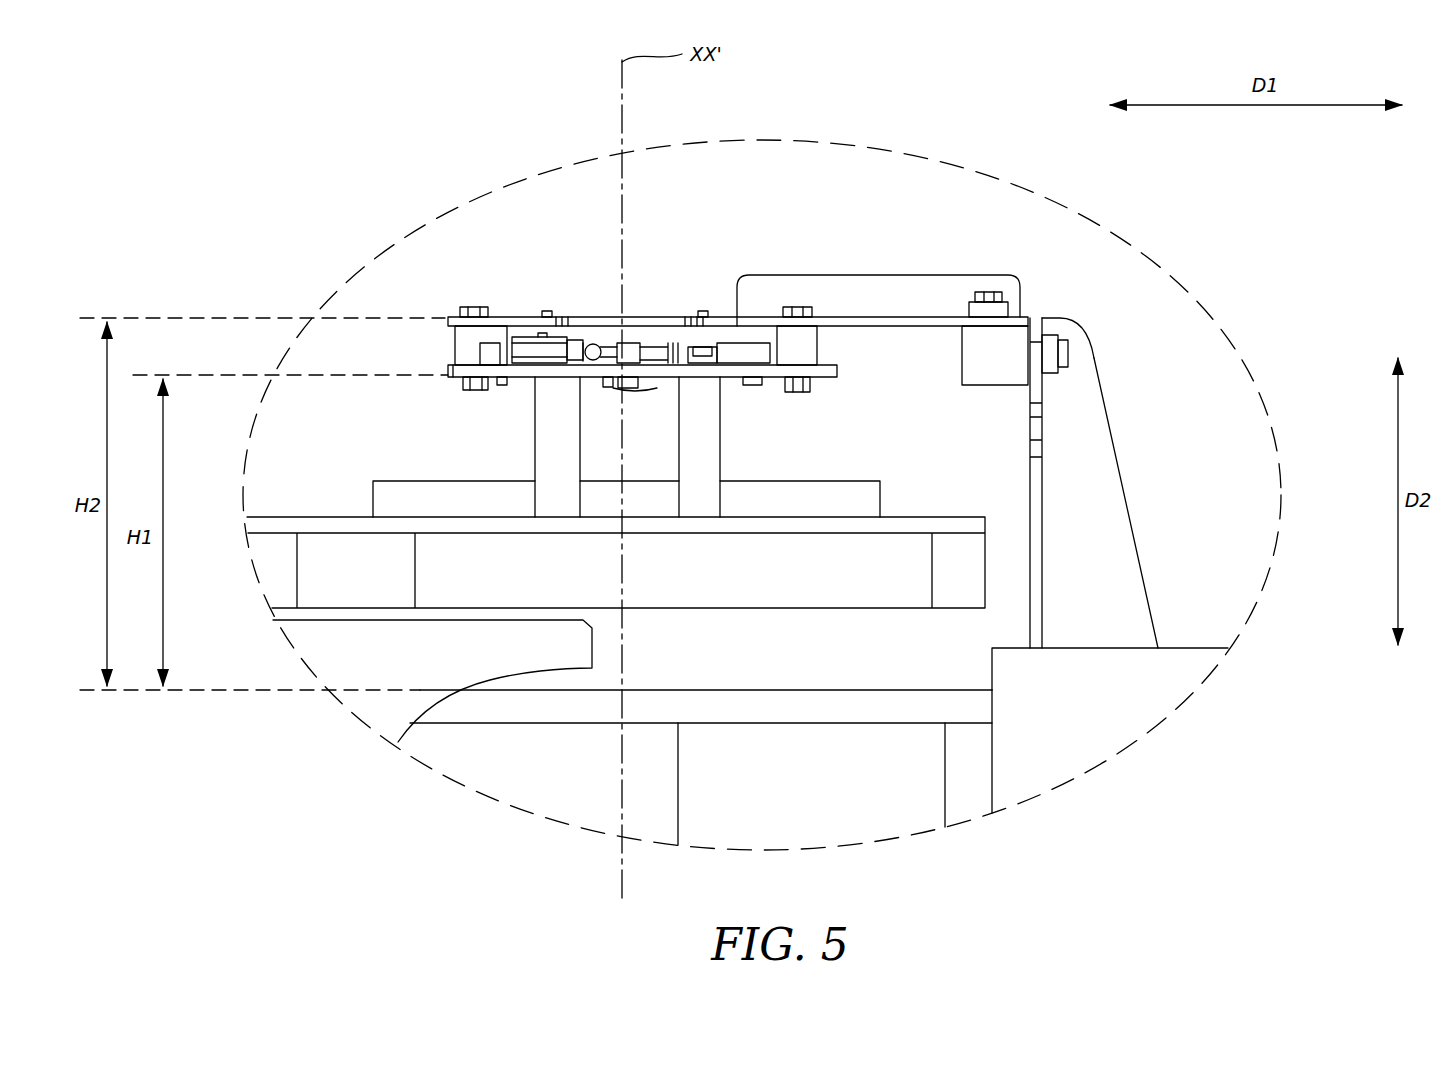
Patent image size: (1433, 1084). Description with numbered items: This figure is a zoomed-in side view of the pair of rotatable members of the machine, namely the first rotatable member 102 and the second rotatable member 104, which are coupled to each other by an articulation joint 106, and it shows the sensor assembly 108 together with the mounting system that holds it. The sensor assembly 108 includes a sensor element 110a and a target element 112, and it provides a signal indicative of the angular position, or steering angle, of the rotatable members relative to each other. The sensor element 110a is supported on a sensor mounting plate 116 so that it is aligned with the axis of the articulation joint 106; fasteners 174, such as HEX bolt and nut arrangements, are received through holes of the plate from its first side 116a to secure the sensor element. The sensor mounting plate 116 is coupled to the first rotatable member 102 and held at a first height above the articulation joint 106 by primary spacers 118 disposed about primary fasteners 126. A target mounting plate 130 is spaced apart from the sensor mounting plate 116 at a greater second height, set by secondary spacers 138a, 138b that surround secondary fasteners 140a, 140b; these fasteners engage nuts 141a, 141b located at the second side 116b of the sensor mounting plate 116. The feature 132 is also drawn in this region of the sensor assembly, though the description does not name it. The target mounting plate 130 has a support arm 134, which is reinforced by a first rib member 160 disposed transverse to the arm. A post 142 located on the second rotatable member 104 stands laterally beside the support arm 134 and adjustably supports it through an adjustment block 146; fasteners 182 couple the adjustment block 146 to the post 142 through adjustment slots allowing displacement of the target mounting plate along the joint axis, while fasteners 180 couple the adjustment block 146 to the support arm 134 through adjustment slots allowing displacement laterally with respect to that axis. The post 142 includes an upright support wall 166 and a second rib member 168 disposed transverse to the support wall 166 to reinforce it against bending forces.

The first rotatable member 102 is at (830, 580).
The second rotatable member 104 is at (1190, 648).
The articulation joint 106 is at (561, 725).
The sensor assembly 108 is at (421, 347).
The sensor element 110a is at (490, 345).
The target element 112 is at (765, 340).
The sensor mounting plate 116 is at (439, 368).
The first side of sensor mounting plate 116a is at (670, 340).
The second side of sensor mounting plate 116b is at (585, 380).
The primary spacer 118 is at (1043, 303).
The primary fastener 126 is at (700, 348).
The target mounting plate 130 is at (655, 314).
The cylinder 132 is at (593, 317).
The support arm 134 is at (933, 317).
The secondary spacer 138a is at (463, 306).
The secondary spacer 138b is at (818, 342).
The secondary fastener 140a is at (469, 330).
The secondary fastener 140b is at (797, 306).
The nut 141a is at (465, 385).
The nut 141b is at (812, 385).
The post 142 is at (1102, 391).
The adjustment block 146 is at (995, 385).
The first rib member 160 is at (917, 276).
The support wall 166 is at (1032, 600).
The second rib member 168 is at (1123, 485).
The fastener 174 is at (500, 389).
The fastener 180 is at (990, 292).
The fastener 182 is at (1068, 355).